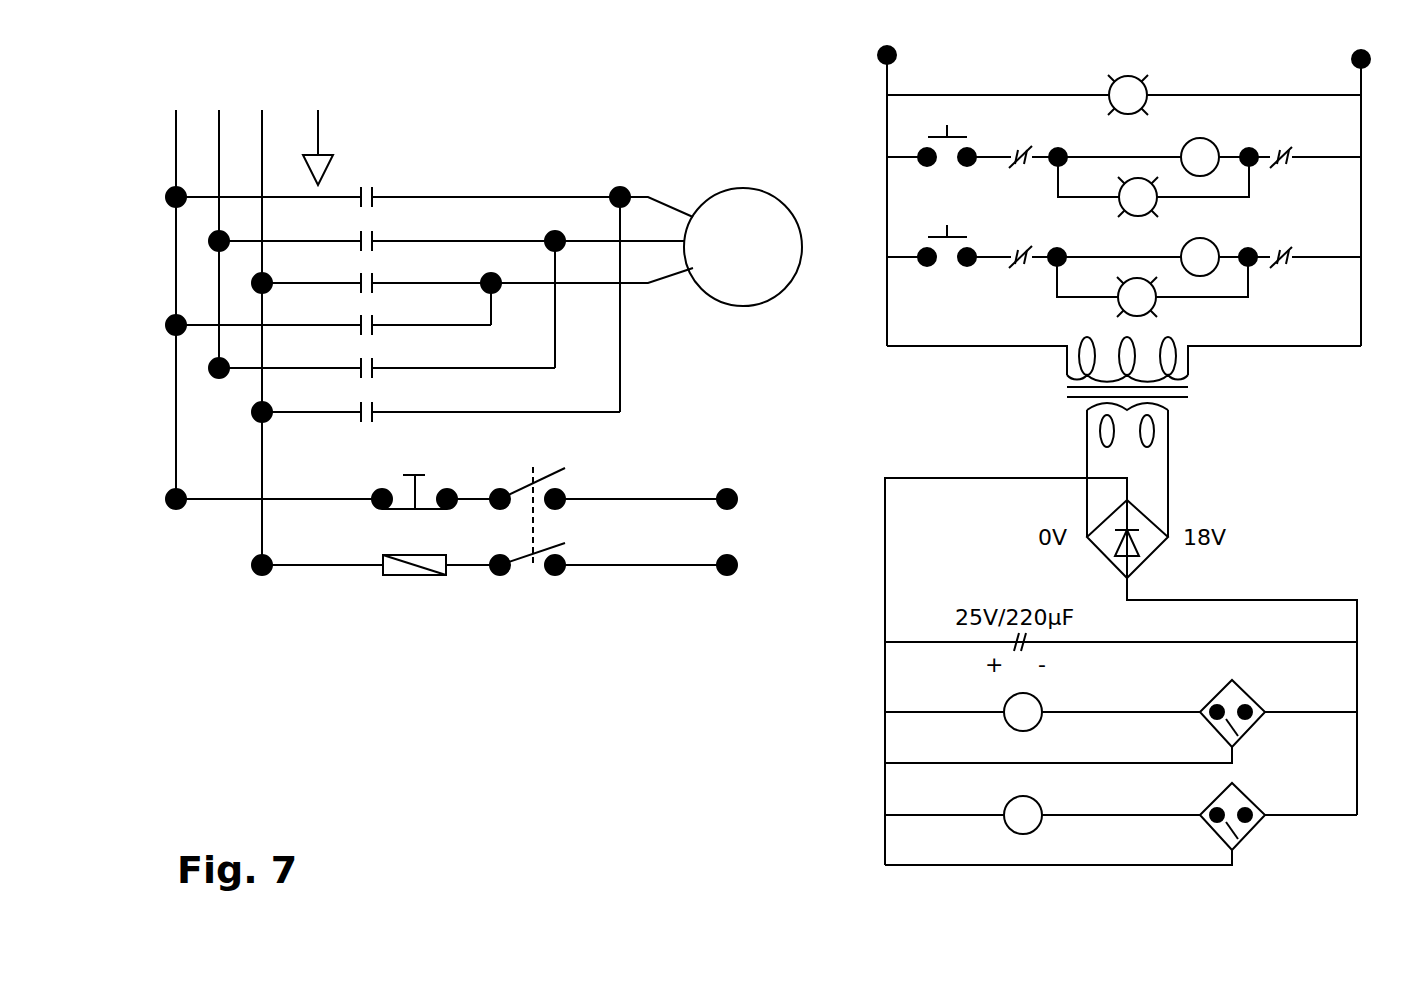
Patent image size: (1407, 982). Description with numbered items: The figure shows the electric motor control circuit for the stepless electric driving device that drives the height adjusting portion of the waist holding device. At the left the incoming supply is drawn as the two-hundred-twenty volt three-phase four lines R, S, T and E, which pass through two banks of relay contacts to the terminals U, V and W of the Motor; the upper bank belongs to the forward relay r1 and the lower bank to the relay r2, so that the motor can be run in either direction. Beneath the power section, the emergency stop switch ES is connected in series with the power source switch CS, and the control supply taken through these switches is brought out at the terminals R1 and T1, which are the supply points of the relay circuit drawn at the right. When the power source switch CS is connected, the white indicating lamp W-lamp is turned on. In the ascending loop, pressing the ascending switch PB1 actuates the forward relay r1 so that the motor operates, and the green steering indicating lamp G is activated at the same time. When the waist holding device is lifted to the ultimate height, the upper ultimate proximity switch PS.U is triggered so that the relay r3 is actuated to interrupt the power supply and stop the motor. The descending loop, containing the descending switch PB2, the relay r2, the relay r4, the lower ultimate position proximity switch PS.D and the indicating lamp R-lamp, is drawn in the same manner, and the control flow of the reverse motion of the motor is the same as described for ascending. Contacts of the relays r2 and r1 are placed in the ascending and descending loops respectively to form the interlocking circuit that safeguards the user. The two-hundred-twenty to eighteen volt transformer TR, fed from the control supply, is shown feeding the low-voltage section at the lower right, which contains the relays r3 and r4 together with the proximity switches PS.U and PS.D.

The three-phase supply line R is at (176, 290).
The three-phase supply line S is at (218, 225).
The three-phase supply line T is at (262, 323).
The fourth supply line E is at (318, 133).
The forward relay r1 is at (746, 215).
The relay r2 (coil and contacts) r2 is at (746, 271).
The relay r3 is at (1032, 426).
The relay r4 (coil and contact) r4 is at (1032, 528).
The motor terminal U is at (651, 188).
The motor terminal V is at (614, 232).
The motor terminal W is at (587, 274).
The electric motor Motor is at (743, 247).
The emergency stop switch ES is at (425, 479).
The power source switch CS is at (544, 512).
The control supply terminal R1 is at (747, 269).
The control supply terminal T1 is at (981, 304).
The ascending switch PB1 is at (960, 139).
The descending switch PB2 is at (960, 239).
The white indicating lamp W-lamp is at (1128, 95).
The green steering indicating lamp G is at (1153, 187).
The red indicator lamp R-lamp is at (1152, 287).
The 220/18V transformer TR is at (1160, 437).
The upper ultimate proximity switch PS.U is at (1260, 713).
The ultimate position proximity switch PS.D is at (1260, 816).